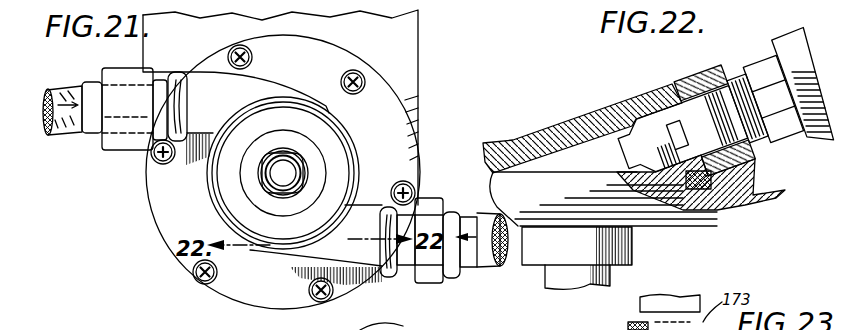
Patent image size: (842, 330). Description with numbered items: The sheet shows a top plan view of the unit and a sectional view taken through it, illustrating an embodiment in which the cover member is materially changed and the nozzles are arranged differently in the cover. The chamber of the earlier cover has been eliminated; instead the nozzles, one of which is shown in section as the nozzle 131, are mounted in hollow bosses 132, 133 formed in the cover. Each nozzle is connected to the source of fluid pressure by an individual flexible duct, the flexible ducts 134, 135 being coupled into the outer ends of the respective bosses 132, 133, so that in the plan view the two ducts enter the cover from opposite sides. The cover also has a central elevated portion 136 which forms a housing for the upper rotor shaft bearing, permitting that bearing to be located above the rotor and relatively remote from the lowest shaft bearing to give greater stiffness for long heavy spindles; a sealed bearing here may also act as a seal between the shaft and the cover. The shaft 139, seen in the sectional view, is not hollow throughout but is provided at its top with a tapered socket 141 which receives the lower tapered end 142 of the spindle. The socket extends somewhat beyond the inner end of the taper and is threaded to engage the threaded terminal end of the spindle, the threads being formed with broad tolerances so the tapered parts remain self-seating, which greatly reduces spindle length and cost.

In FIG. 22, the nozzle 131 is at (650, 134).
In FIG. 21, the hollow boss 132 is at (377, 268).
In FIG. 22, the hollow boss 132 is at (676, 82).
In FIG. 21, the hollow boss 133 is at (195, 82).
In FIG. 21, the flexible duct 134 is at (494, 264).
In FIG. 21, the flexible duct 135 is at (67, 137).
In FIG. 21, the central elevated portion 136 is at (340, 157).
In FIG. 21, the shaft 139 is at (268, 188).
In FIG. 22, the shaft 139 is at (583, 286).
In FIG. 21, the tapered socket 141 is at (290, 162).
In FIG. 21, the lower tapered end 142 is at (316, 324).